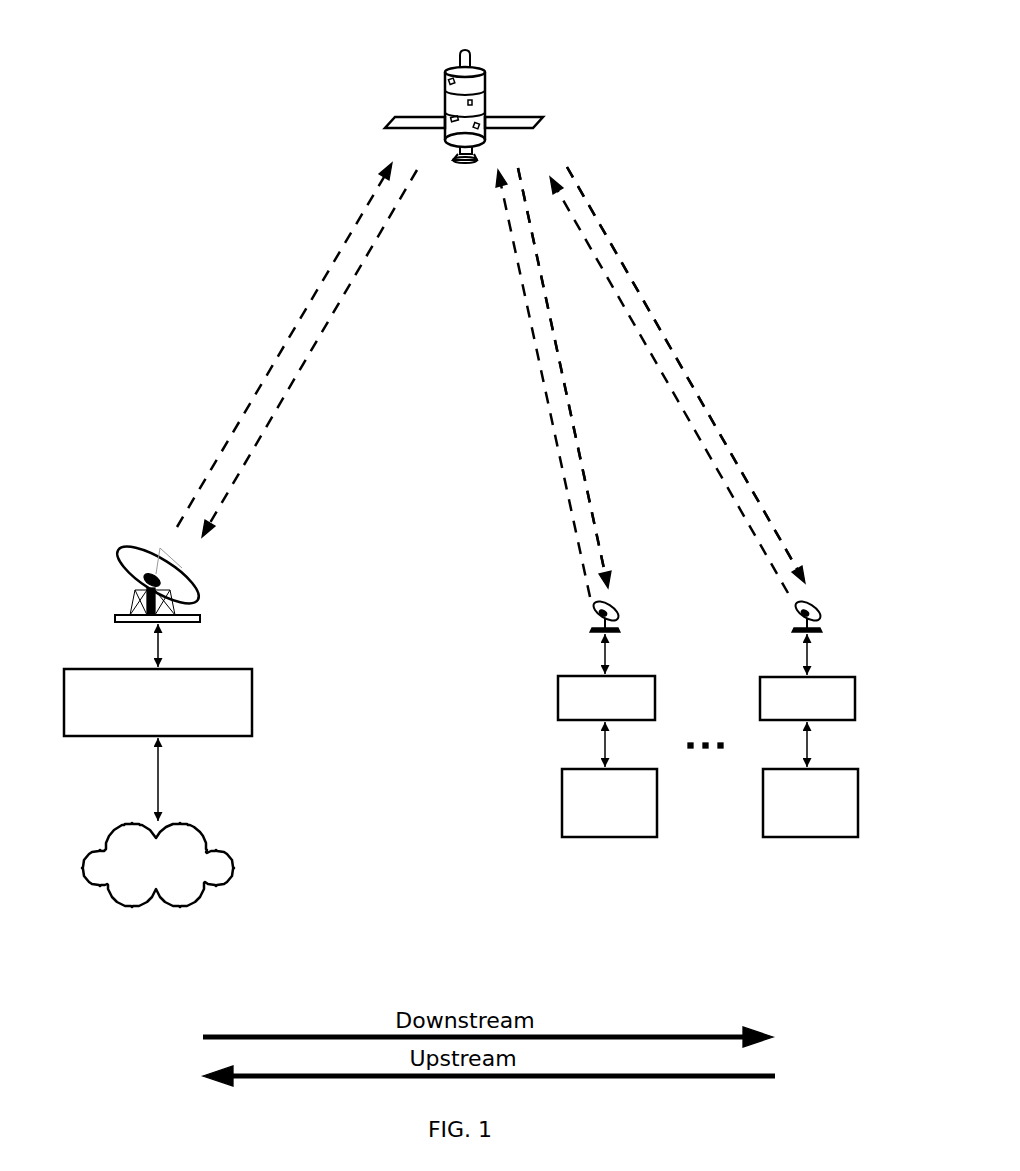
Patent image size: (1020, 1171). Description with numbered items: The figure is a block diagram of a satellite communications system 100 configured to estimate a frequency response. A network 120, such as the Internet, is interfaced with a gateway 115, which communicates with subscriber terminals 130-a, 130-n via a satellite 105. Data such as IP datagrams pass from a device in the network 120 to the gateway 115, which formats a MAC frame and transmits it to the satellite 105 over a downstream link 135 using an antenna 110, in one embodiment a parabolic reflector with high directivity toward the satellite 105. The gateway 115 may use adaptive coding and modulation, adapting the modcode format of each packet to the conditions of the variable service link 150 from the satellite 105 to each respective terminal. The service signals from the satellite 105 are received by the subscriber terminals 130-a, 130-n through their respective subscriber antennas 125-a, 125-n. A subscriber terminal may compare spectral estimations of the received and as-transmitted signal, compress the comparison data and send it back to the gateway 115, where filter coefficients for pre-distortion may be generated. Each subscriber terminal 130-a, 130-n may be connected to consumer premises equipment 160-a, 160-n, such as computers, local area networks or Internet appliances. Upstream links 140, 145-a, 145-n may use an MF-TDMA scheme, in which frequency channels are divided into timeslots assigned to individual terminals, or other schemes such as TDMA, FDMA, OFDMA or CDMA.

The satellite communications system 100 is at (700, 925).
The satellite 105 is at (470, 50).
The antenna 110 is at (200, 598).
The gateway 115 is at (252, 703).
The network 120 is at (233, 870).
The subscriber antenna 125-a is at (595, 612).
The subscriber antenna 125-n is at (797, 612).
The subscriber terminal 130-a is at (558, 692).
The subscriber terminal 130-n is at (760, 692).
The downstream link 135 is at (284, 343).
The upstream link 140 is at (350, 280).
The upstream link 145-a is at (545, 388).
The upstream link 145-n is at (672, 394).
The service link 150 is at (627, 275).
The consumer premises equipment 160-a is at (597, 838).
The consumer premises equipment 160-n is at (795, 838).